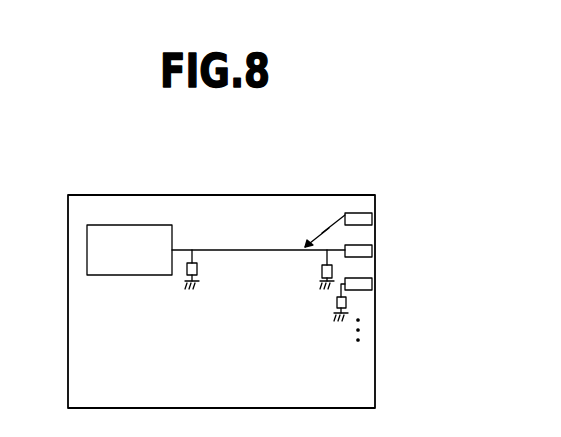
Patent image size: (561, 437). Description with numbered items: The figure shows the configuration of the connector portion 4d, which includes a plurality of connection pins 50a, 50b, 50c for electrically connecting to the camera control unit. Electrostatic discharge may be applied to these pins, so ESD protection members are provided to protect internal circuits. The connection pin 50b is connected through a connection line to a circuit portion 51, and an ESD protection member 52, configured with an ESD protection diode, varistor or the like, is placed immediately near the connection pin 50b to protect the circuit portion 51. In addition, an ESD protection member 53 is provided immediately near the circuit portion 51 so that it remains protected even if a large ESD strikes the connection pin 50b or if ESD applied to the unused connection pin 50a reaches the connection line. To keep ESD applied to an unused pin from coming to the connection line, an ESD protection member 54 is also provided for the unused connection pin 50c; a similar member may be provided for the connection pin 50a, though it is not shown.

The connector portion 4d is at (193, 195).
The circuit portion 51 is at (173, 233).
The connection pin 50a is at (372, 219).
The connection pin 50b is at (372, 251).
The connection pin 50c is at (372, 284).
The ESD protection member 52 is at (322, 268).
The ESD protection member 53 is at (198, 270).
The ESD protection member 54 is at (337, 301).